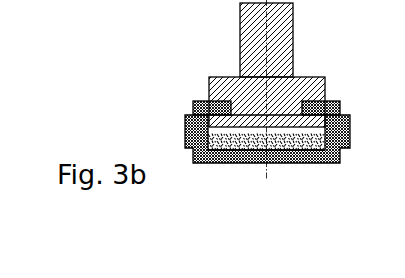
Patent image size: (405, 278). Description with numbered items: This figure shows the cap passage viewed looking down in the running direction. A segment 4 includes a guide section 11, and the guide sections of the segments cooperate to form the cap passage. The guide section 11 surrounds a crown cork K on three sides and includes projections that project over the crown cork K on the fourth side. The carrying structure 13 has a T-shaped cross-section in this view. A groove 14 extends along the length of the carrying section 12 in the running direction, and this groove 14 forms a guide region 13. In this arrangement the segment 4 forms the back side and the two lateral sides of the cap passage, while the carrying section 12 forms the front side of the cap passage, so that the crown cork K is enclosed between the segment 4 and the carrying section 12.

The segment 4 is at (180, 135).
The guide section 11 is at (222, 152).
The carrying section 12 is at (294, 48).
The carrying structure 13 is at (329, 91).
The groove 14 is at (218, 100).
The crown cork K is at (289, 156).